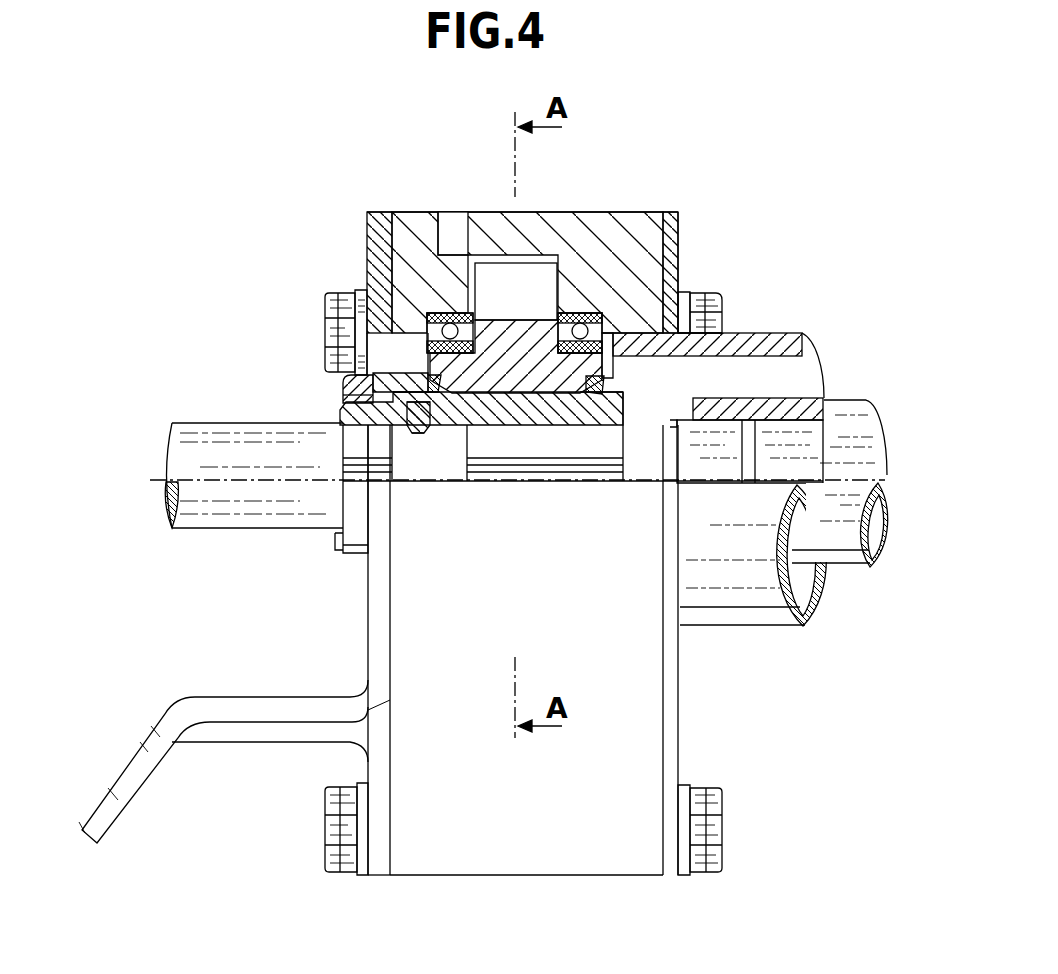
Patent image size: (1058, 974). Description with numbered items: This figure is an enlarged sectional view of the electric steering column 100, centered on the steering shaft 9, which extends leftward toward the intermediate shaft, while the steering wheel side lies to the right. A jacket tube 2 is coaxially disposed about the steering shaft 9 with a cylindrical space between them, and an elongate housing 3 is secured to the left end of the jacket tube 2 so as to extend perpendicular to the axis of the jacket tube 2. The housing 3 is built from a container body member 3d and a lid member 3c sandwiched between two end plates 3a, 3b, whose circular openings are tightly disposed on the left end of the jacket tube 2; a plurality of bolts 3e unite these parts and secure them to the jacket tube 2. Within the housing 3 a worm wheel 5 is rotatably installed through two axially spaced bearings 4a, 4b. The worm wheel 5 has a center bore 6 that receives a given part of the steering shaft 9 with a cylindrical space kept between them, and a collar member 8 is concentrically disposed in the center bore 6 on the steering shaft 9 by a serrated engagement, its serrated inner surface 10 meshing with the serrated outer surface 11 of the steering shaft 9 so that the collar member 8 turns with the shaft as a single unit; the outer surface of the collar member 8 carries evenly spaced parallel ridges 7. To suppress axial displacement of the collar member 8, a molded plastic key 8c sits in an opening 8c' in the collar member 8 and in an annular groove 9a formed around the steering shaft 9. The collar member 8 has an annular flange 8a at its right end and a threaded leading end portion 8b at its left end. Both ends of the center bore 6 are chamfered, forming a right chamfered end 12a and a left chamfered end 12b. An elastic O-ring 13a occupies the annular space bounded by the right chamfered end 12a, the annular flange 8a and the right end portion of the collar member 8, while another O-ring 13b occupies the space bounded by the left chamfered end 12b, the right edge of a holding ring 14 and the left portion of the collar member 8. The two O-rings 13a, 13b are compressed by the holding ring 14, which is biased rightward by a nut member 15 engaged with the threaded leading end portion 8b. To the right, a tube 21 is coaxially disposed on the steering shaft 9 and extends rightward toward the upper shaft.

The electric steering column 100 is at (707, 93).
The jacket tube 2 is at (773, 342).
The housing 3 is at (686, 188).
The end plate 3a is at (698, 298).
The end plate 3b is at (367, 264).
The lid member 3c is at (623, 212).
The container body member 3d is at (433, 212).
The bolts 3e is at (325, 318).
The bearing 4a is at (680, 253).
The bearing 4b is at (433, 313).
The worm wheel 5 is at (545, 277).
The center bore 6 is at (500, 428).
The parallel ridges 7 is at (520, 327).
The collar member 8 is at (605, 418).
The annular flange 8a is at (707, 333).
The threaded leading end portion 8b is at (412, 412).
The molded plastic key 8c is at (361, 507).
The opening 8c' is at (427, 478).
The steering shaft 9 is at (197, 530).
The annular groove 9a is at (397, 470).
The serrated inner surface 10 is at (543, 428).
The serrated outer surface 11 is at (513, 476).
The right chamfered end 12a is at (610, 394).
The left chamfered end 12b is at (365, 375).
The O-ring 13a is at (587, 427).
The O-ring 13b is at (457, 427).
The holding ring 14 is at (383, 375).
The nut member 15 is at (340, 393).
The tube 21 is at (860, 398).